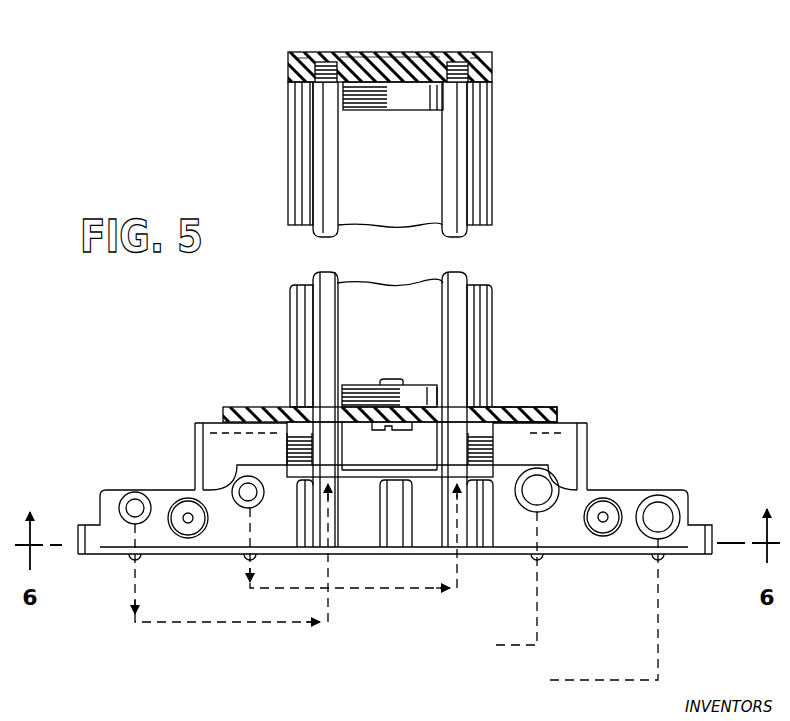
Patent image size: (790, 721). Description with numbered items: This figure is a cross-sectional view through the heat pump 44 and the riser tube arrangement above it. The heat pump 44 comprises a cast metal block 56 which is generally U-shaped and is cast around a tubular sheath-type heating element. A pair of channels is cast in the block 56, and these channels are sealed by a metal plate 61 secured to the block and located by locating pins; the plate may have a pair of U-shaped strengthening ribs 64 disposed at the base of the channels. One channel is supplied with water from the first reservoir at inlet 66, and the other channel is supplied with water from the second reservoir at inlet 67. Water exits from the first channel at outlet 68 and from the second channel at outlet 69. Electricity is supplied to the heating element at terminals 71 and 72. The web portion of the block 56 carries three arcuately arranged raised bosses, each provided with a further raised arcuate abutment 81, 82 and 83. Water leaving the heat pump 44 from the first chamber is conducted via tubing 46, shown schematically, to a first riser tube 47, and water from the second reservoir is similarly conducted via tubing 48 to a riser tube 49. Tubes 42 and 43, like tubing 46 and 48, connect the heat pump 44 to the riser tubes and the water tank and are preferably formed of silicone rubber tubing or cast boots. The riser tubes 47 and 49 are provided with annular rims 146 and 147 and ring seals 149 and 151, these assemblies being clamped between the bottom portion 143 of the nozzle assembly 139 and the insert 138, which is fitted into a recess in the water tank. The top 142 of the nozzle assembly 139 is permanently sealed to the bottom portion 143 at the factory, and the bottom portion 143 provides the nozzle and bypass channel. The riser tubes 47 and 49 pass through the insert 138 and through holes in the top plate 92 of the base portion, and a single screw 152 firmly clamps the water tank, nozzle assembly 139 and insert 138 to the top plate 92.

The nozzle assembly 139 is at (506, 60).
The ring seal 149 is at (300, 52).
The ring seal 151 is at (433, 62).
The top of nozzle assembly 142 is at (461, 56).
The annular rim 146 is at (314, 84).
The annular rim 147 is at (462, 84).
The bottom portion 143 is at (383, 80).
The insert 138 is at (483, 172).
The first riser tube 47 is at (312, 278).
The riser tube 49 is at (468, 278).
The raised arcuate abutment 81 is at (204, 423).
The raised arcuate abutment 82 is at (583, 423).
The raised arcuate abutment 83 is at (268, 407).
The top plate 92 is at (521, 407).
The heat pump 44 is at (609, 442).
The screw 152 is at (393, 428).
The cast metal block 56 is at (100, 503).
The outlet 68 is at (128, 493).
The outlet 69 is at (240, 483).
The terminal 72 is at (191, 520).
The inlet 67 is at (554, 487).
The terminal 71 is at (600, 519).
The inlet 66 is at (662, 496).
The tubing 46 is at (129, 582).
The tubing 48 is at (358, 588).
The metal plate 61 is at (462, 553).
The U-shaped strengthening ribs 64 is at (247, 559).
The tube 43 is at (541, 612).
The tube 42 is at (663, 612).